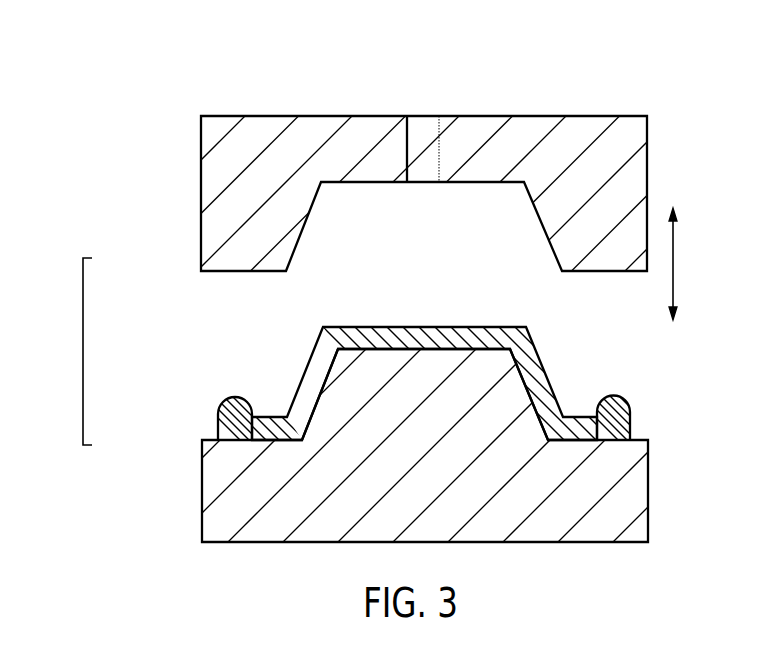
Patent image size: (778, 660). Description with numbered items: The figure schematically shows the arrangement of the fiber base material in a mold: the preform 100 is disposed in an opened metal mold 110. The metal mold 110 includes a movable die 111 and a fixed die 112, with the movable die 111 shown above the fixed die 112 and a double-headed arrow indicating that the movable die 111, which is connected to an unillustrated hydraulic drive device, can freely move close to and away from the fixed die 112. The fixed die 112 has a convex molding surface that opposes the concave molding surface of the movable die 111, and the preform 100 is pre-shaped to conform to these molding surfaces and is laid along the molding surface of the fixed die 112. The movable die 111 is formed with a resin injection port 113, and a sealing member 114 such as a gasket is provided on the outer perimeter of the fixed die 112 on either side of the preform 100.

The preform 100 is at (423, 337).
The metal mold 110 is at (83, 355).
The movable die 111 is at (193, 202).
The fixed die 112 is at (193, 470).
The resin injection port 113 is at (409, 137).
The sealing member 114 is at (238, 397).